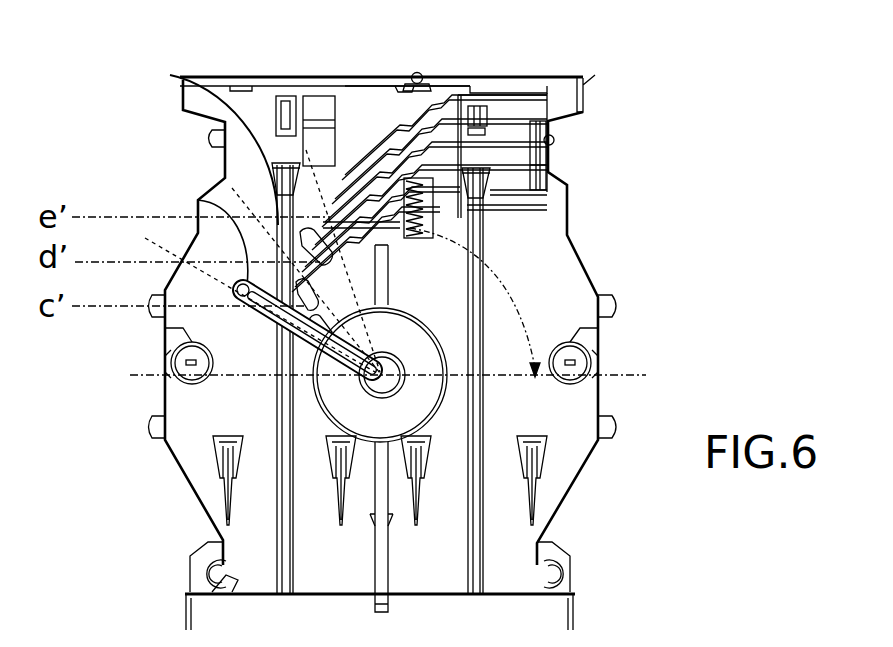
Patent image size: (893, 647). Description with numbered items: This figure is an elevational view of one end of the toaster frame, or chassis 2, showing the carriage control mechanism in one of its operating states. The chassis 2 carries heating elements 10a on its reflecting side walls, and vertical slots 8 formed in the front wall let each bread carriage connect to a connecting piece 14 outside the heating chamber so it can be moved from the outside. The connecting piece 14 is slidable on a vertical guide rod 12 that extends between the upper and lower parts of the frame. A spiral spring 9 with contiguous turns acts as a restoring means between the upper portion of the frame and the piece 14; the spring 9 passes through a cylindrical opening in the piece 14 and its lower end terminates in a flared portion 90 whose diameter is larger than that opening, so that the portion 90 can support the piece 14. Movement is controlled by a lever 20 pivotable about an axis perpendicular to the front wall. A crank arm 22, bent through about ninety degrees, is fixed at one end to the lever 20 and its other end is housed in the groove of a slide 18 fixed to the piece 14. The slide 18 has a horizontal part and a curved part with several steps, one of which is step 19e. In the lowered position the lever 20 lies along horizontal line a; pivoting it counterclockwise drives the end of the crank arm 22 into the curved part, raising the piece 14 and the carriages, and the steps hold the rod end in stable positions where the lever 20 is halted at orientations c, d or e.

The chassis 2 is at (620, 168).
The vertical slots 8 is at (284, 426).
The spiral spring 9 is at (417, 72).
The heating elements 10a is at (192, 385).
The vertical guide rod 12 is at (382, 553).
The connecting piece 14 is at (395, 105).
The slide 18 is at (433, 107).
The step 19e is at (172, 79).
The lever 20 is at (292, 246).
The crank arm 22 is at (333, 297).
The flared portion 90 is at (430, 216).
The line a is at (399, 311).
The orientation c is at (333, 251).
The orientation d is at (303, 263).
The orientation e is at (247, 300).